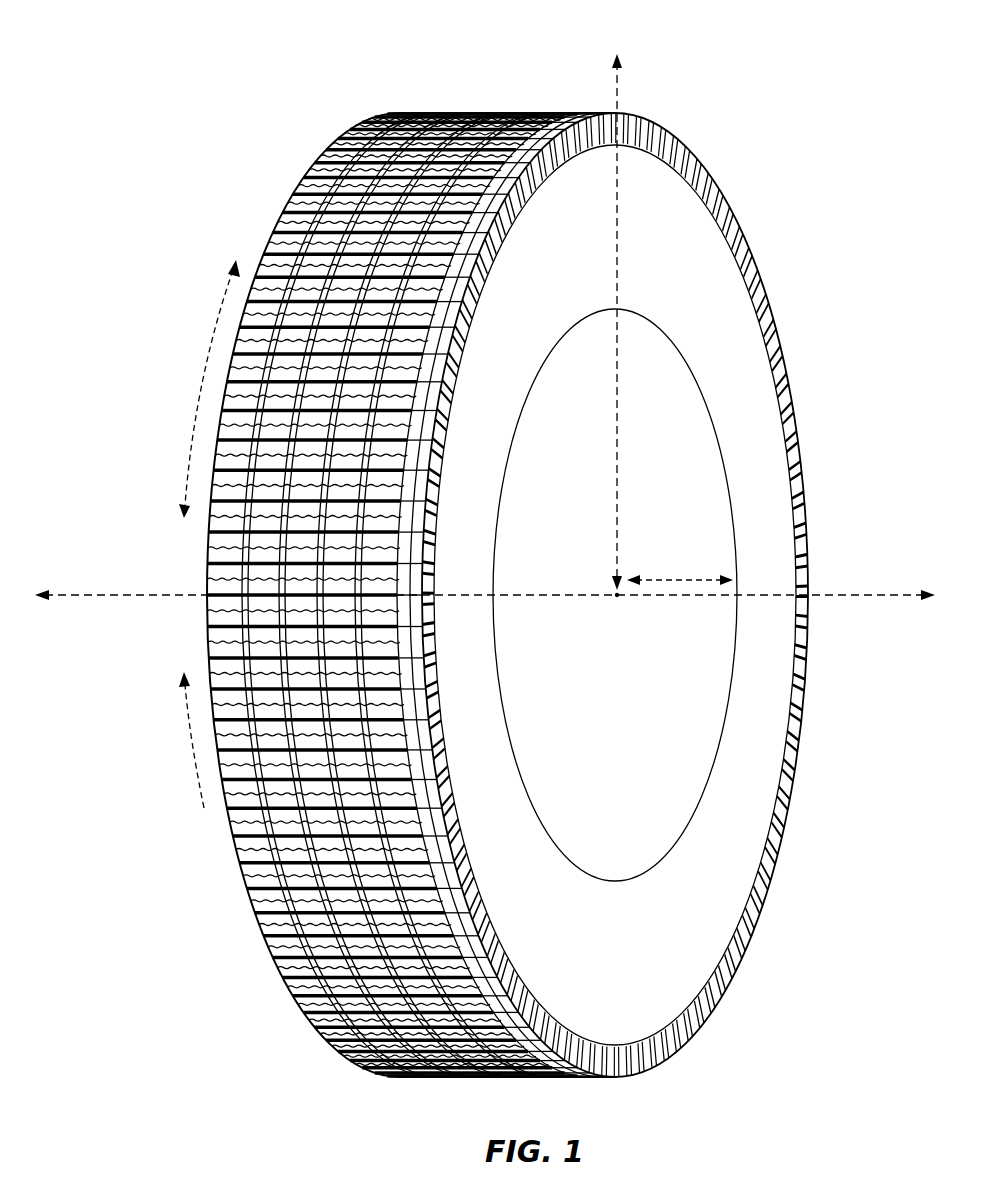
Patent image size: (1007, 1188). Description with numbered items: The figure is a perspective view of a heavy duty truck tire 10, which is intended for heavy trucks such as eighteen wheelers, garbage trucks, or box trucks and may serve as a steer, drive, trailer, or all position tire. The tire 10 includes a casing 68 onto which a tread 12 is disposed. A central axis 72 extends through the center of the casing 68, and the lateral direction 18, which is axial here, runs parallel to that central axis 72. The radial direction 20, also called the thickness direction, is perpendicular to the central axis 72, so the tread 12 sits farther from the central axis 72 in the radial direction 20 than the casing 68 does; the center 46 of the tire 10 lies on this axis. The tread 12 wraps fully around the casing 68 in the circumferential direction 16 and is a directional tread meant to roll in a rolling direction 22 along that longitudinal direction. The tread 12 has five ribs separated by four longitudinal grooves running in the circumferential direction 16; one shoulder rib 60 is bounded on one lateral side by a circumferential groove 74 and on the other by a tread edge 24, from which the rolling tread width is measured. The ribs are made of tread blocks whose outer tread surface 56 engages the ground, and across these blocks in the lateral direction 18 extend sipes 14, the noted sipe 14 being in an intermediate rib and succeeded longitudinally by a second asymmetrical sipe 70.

The tire 10 is at (279, 44).
The tread 12 is at (323, 158).
The sipe 14 is at (350, 565).
The circumferential direction 16 is at (205, 380).
The lateral direction 18 is at (680, 580).
The radial direction 20 is at (620, 97).
The rolling direction 22 is at (195, 748).
The tread edge 24 is at (532, 1024).
The center 46 is at (618, 598).
The tread surface 56 is at (284, 806).
The shoulder rib 60 is at (402, 702).
The casing 68 is at (737, 302).
The second asymmetrical sipe 70 is at (352, 548).
The central axis 72 is at (866, 598).
The circumferential groove 74 is at (404, 718).